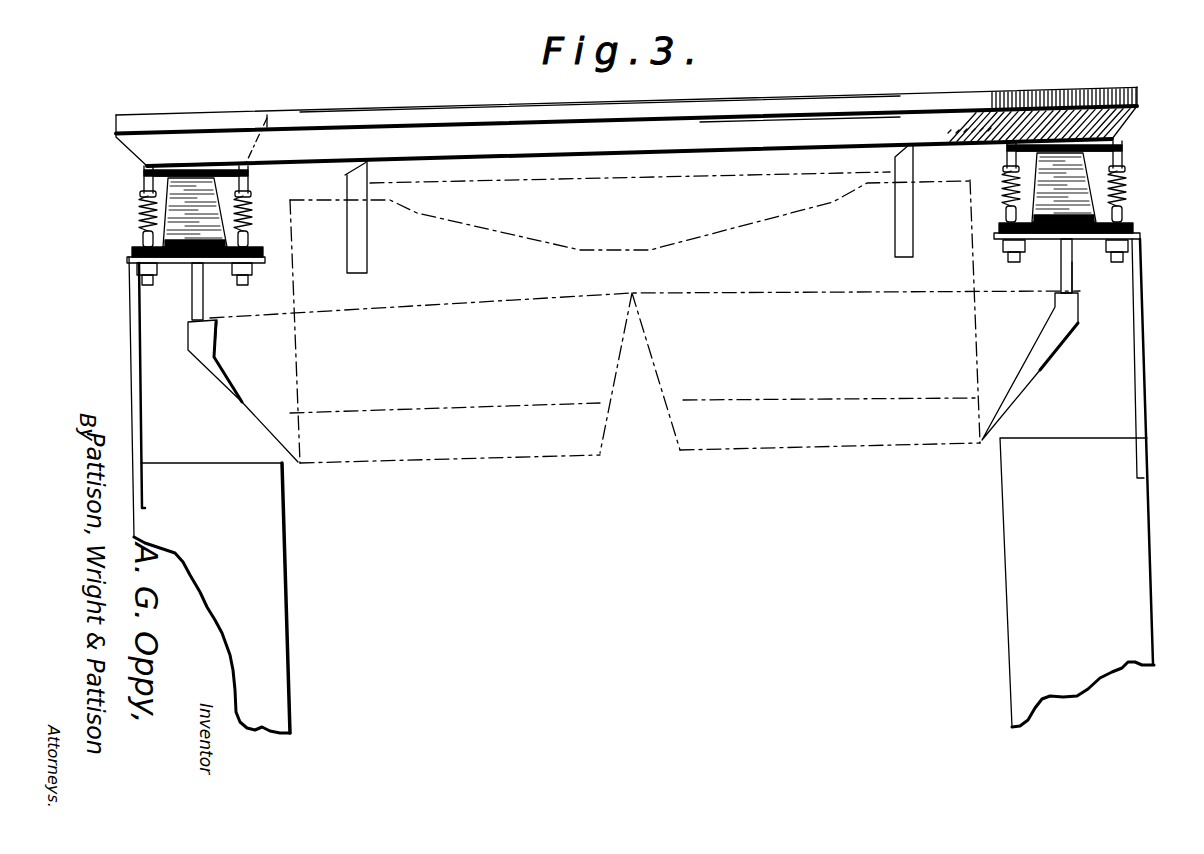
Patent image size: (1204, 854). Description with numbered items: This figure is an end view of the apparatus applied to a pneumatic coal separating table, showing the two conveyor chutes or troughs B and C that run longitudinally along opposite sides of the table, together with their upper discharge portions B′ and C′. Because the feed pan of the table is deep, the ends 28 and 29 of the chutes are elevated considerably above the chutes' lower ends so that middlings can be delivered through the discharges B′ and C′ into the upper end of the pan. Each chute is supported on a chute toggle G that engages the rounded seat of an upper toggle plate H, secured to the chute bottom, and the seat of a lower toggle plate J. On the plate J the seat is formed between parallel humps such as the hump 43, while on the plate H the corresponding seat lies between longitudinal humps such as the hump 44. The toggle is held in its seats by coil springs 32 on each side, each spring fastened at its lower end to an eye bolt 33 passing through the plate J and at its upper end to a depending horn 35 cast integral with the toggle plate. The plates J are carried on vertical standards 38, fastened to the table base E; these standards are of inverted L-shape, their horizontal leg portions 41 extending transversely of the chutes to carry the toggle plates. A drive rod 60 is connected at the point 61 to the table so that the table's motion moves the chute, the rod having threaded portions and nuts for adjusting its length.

The end of chute 28 is at (153, 122).
The end of chute 29 is at (1075, 97).
The discharge portion of chute B B′ is at (388, 113).
The conveyor chute B is at (205, 152).
The conveyor chute C is at (1125, 88).
The discharge portion of chute C C′ is at (866, 102).
The upper chute toggle plate H is at (146, 174).
The depending horn 35 is at (142, 194).
The coil spring 32 is at (140, 208).
The eye bolt 33 is at (142, 238).
The chute toggle G is at (629, 200).
The hump or ridge 43 is at (185, 255).
The lower chute toggle plate J is at (134, 253).
The horizontal leg portion 41 is at (1153, 272).
The connection of rod to table 61 is at (1073, 285).
The rod 60 is at (192, 312).
The vertical standard 38 is at (130, 333).
The table base E is at (644, 585).
The hump or extension 44 is at (207, 175).